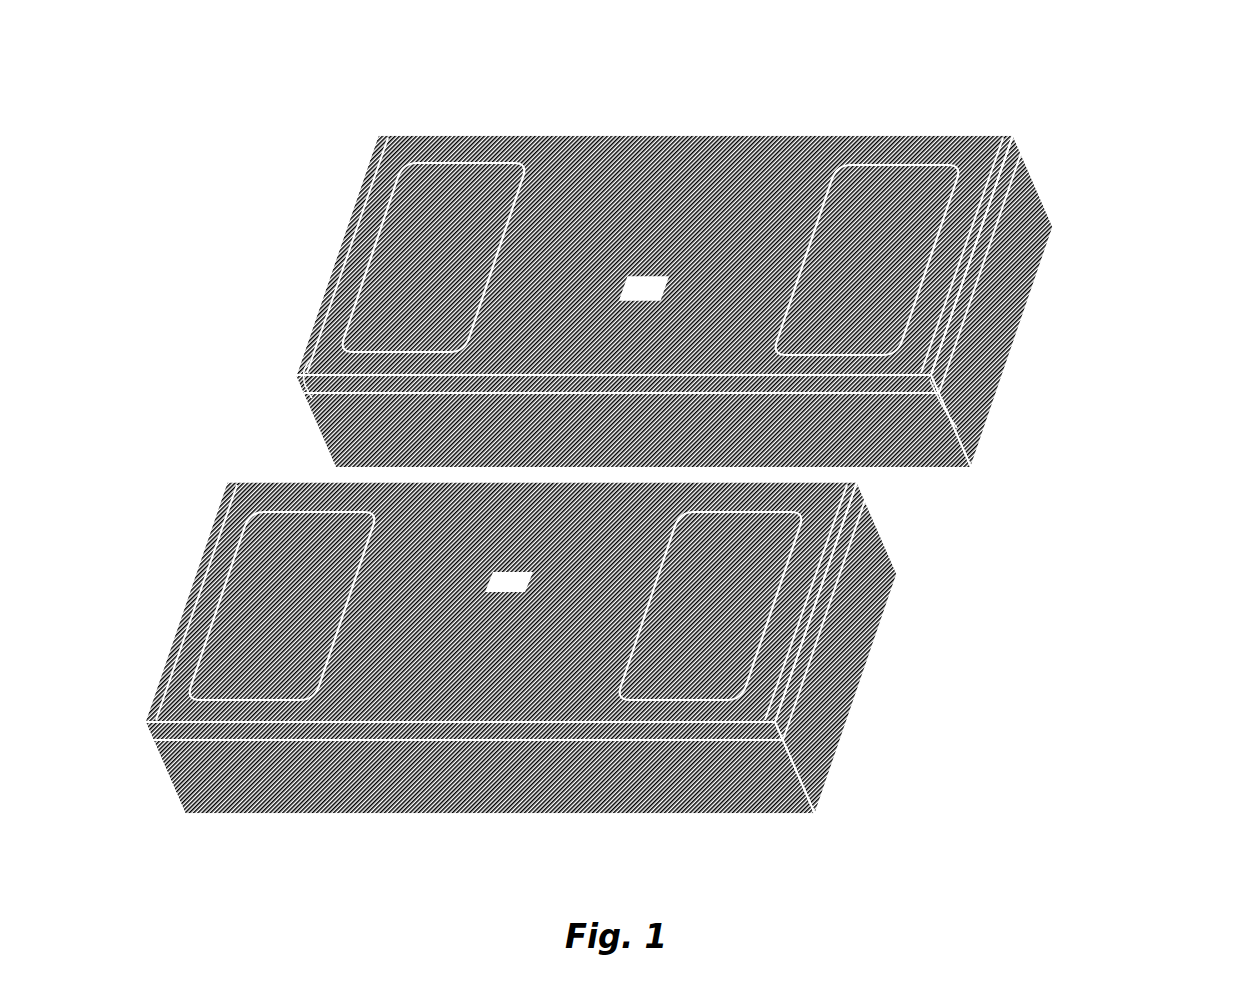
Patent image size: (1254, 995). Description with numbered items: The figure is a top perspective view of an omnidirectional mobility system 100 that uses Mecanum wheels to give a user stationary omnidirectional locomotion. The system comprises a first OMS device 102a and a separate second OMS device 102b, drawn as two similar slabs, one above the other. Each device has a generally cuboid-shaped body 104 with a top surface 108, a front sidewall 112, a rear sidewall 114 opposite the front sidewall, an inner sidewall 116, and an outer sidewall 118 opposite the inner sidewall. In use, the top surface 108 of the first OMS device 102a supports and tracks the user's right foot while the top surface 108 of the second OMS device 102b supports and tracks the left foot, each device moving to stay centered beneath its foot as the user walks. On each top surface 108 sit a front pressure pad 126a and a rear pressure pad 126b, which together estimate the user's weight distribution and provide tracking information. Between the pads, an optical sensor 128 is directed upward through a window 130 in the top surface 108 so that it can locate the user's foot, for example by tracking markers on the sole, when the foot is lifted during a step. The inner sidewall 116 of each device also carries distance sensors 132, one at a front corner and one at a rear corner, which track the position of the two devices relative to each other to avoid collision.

The omnidirectional mobility system 100 is at (683, 427).
The first OMS device 102a is at (1062, 313).
The second OMS device 102b is at (955, 670).
The body 104 is at (378, 135).
The top surface 108 is at (593, 162).
The front sidewall 112 is at (140, 673).
The rear sidewall 114 is at (825, 748).
The inner sidewall 116 is at (898, 437).
The outer sidewall 118 is at (262, 783).
The front pressure pad 126a is at (463, 178).
The rear pressure pad 126b is at (905, 188).
The optical sensor 128 is at (648, 283).
The window 130 is at (674, 262).
The distance sensor 132 is at (322, 428).